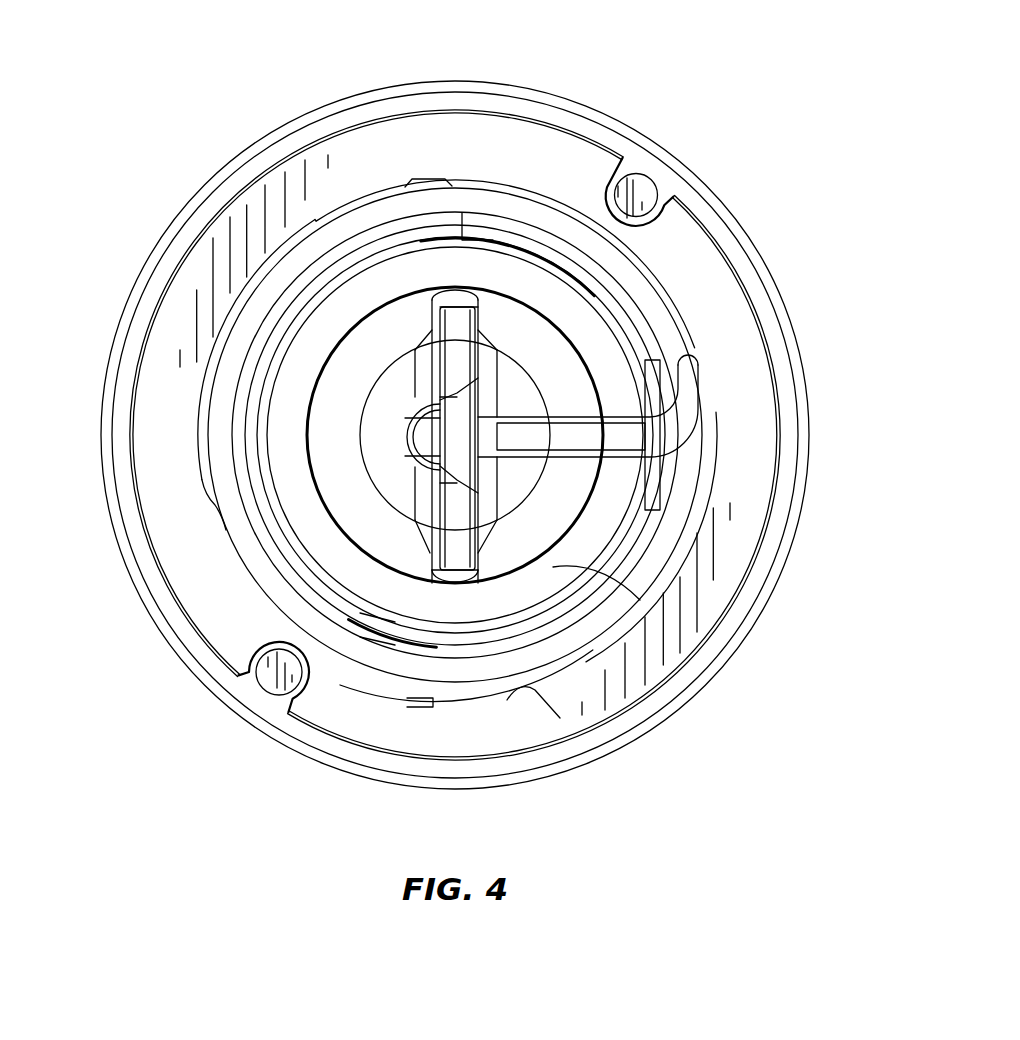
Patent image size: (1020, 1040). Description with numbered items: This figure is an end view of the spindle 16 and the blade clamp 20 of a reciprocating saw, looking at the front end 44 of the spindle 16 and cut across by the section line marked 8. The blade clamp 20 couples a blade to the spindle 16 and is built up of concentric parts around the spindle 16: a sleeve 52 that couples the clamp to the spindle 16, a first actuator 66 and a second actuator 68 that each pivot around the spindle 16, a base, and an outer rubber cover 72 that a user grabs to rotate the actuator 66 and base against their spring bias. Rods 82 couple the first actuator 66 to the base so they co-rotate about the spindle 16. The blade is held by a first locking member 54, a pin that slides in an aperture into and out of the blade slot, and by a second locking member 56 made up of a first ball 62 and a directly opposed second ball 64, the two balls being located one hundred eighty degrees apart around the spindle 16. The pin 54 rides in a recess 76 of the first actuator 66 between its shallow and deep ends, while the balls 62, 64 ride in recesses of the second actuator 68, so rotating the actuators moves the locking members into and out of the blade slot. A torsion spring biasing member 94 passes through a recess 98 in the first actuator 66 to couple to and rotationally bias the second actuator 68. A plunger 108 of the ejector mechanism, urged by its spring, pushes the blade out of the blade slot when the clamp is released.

The blade clamp 20 is at (643, 94).
The cover 72 is at (168, 222).
The rods 82 is at (640, 188).
The first actuator 66 is at (262, 225).
The recess 98 is at (336, 226).
The biasing member 94 is at (428, 204).
The second actuator 68 is at (202, 403).
The section line 8- 8 is at (52, 436).
The sleeve 52 is at (577, 567).
The spindle 16 is at (567, 377).
The first locking member 54 is at (668, 462).
The first ball 62 is at (462, 296).
The second ball 64 is at (447, 583).
The second locking member 56 is at (462, 583).
The front end 44 is at (385, 470).
The plunger 108 is at (457, 528).
The recess 76 is at (517, 690).